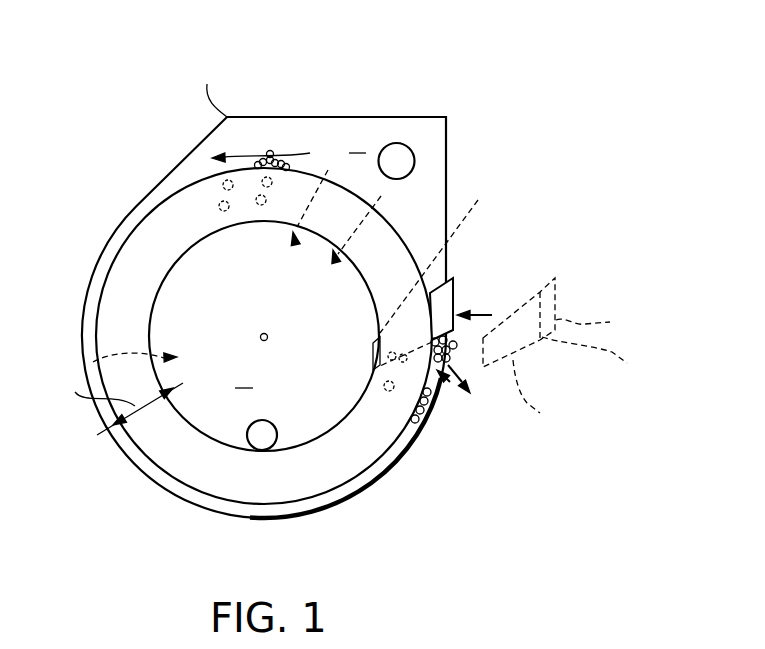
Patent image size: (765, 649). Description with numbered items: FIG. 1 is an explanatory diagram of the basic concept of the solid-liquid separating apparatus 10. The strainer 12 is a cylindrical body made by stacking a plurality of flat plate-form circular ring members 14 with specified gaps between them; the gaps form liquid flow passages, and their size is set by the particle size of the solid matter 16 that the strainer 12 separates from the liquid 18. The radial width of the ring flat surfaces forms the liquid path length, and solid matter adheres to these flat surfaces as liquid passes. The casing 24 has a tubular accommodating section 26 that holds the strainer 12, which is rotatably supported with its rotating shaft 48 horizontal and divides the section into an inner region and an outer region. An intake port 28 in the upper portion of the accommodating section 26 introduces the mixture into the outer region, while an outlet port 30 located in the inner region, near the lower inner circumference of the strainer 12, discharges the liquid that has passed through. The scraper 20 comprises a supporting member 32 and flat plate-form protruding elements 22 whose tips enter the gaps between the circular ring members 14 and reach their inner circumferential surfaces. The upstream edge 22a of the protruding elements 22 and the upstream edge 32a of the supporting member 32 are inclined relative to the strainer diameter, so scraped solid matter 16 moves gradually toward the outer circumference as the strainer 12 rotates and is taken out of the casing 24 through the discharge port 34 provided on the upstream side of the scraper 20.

The solid-liquid separating apparatus 10 is at (481, 45).
The strainer 12 is at (127, 202).
The circular ring members 14 is at (107, 282).
The solid matter 16 is at (217, 172).
The liquid 18 is at (298, 245).
The scraper 20 is at (470, 262).
The protruding elements 22 is at (558, 382).
The edge of protruding elements 22a is at (547, 396).
The casing 24 is at (256, 102).
The accommodating section 26 is at (390, 118).
The intake port 28 is at (412, 161).
The outlet port 30 is at (268, 437).
The supporting member 32 is at (595, 311).
The edge of supporting member 32a is at (601, 364).
The discharge port 34 is at (441, 377).
The rotating shaft 48 is at (258, 336).